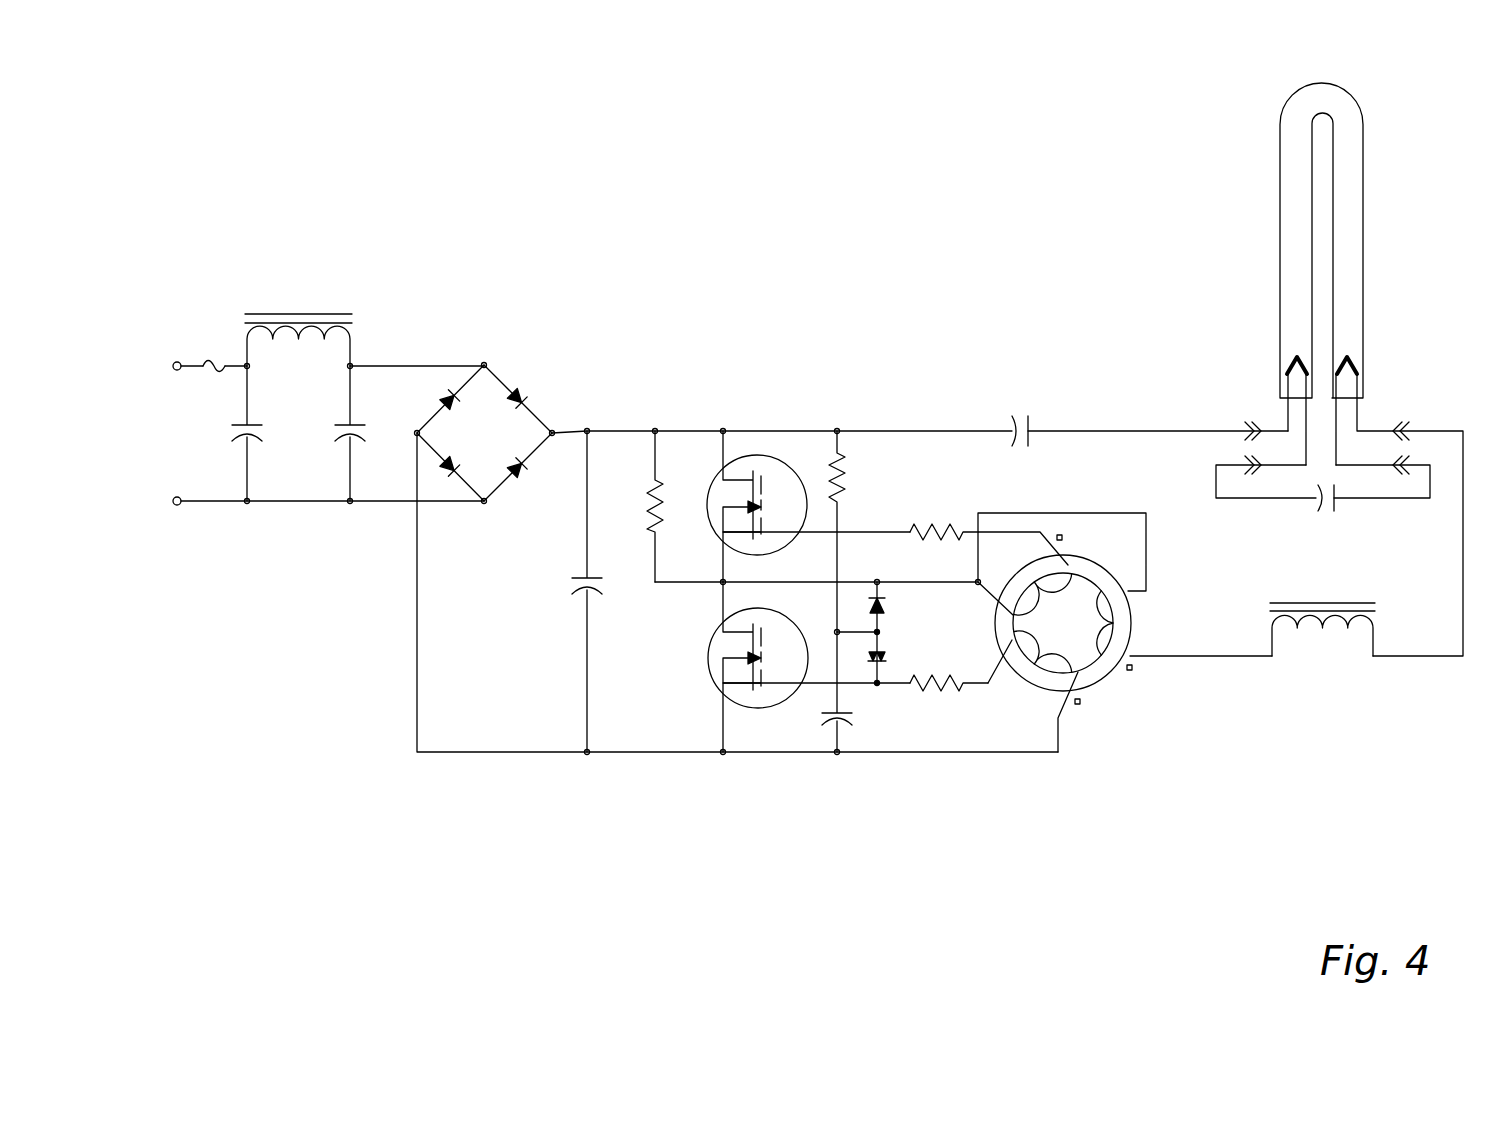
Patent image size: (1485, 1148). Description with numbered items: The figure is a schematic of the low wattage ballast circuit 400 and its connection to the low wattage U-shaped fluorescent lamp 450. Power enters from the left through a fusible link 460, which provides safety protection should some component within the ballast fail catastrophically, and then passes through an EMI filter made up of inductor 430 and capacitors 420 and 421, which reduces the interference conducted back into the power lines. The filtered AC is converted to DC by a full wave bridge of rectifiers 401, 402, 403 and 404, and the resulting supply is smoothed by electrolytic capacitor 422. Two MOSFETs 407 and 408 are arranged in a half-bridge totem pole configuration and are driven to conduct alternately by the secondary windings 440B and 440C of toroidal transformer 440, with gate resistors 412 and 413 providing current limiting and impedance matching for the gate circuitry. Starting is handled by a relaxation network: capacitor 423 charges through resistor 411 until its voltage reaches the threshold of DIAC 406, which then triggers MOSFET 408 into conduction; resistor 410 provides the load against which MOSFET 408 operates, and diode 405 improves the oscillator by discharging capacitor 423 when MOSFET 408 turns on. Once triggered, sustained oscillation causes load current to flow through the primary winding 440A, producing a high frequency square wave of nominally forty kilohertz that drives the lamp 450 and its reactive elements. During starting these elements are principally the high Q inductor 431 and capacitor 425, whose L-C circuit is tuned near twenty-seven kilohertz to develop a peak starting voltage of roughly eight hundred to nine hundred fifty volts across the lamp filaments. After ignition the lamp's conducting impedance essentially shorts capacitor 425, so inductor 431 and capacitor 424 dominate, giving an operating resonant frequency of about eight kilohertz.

The low wattage ballast circuit 400 is at (358, 207).
The fusible link 460 is at (216, 381).
The inductor 430 is at (298, 343).
The capacitor 420 is at (264, 433).
The capacitor 421 is at (366, 433).
The full wave bridge rectifier 401 is at (439, 399).
The full wave bridge rectifier 402 is at (529, 399).
The full wave bridge rectifier 403 is at (526, 467).
The full wave bridge rectifier 404 is at (485, 446).
The electrolytic capacitor 422 is at (569, 591).
The resistor 410 is at (633, 506).
The resistor 411 is at (863, 531).
The MOSFET 407 is at (757, 506).
The MOSFET 408 is at (758, 667).
The gate resistor 412 is at (944, 543).
The gate resistor 413 is at (949, 696).
The diode 405 is at (900, 607).
The DIAC 406 is at (900, 657).
The capacitor 423 is at (858, 692).
The toroidal transformer 440 is at (1062, 625).
The primary winding 440A is at (1201, 632).
The secondary winding 440B is at (1062, 564).
The secondary winding 440C is at (1031, 696).
The capacitor 424 is at (1021, 414).
The capacitor 425 is at (1323, 498).
The low wattage lamp 450 is at (1340, 369).
The inductor 431 is at (1322, 629).